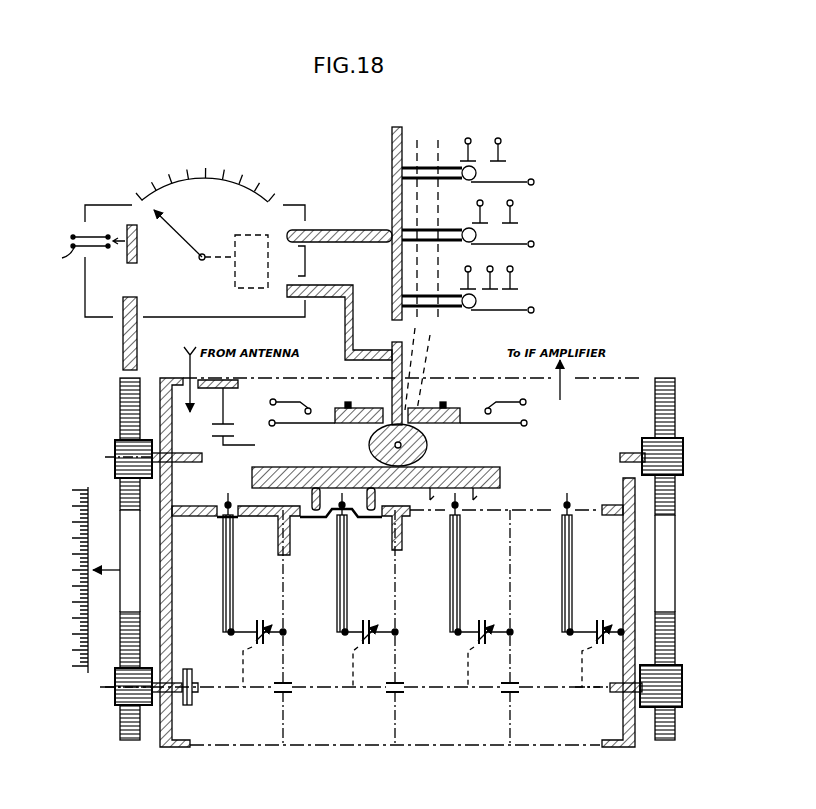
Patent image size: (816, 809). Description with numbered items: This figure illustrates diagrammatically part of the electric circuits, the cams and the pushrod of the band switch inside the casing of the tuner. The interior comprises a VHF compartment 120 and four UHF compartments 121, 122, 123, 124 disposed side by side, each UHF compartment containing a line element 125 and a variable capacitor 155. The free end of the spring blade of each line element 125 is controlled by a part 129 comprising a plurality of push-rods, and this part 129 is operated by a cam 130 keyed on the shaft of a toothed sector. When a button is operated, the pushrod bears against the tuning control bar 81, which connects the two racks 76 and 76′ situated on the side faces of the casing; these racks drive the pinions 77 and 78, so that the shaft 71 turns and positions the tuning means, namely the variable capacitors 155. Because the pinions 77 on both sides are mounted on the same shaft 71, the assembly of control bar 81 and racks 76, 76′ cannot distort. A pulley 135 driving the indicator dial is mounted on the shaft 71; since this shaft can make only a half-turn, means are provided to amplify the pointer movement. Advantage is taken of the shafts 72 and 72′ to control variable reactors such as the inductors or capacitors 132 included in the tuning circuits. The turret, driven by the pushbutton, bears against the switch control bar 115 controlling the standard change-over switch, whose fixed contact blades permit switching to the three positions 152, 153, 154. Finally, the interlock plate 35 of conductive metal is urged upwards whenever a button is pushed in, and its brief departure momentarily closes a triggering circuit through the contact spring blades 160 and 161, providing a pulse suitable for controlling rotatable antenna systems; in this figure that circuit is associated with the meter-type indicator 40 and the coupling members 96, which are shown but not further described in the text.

The tuning indicator meter 40 is at (151, 179).
The contact spring blade 161 is at (72, 237).
The contact spring blade 160 is at (93, 256).
The interlock plate 35 is at (137, 262).
The tuning control bar 81 is at (123, 332).
The coupling rods 96 is at (346, 334).
The switch control bar 115 is at (404, 322).
The switch position 154 is at (522, 170).
The switch position 153 is at (522, 232).
The switch position 152 is at (522, 298).
The variable reactor 132 is at (228, 432).
The VHF compartment 120 is at (638, 378).
The cam 130 is at (414, 445).
The push-rod part 129 is at (496, 459).
The shaft 72 is at (153, 445).
The shaft 72' is at (622, 443).
The pinion 78 is at (115, 452).
The rack 76 is at (106, 559).
The rack 76' is at (680, 559).
The pinion 77 is at (118, 699).
The shaft 71 is at (183, 673).
The pulley 135 is at (194, 700).
The line element 125 is at (223, 594).
The UHF compartment 121 is at (260, 627).
The UHF compartment 122 is at (370, 619).
The UHF compartment 123 is at (484, 619).
The UHF compartment 124 is at (593, 590).
The variable capacitor 155 is at (268, 648).